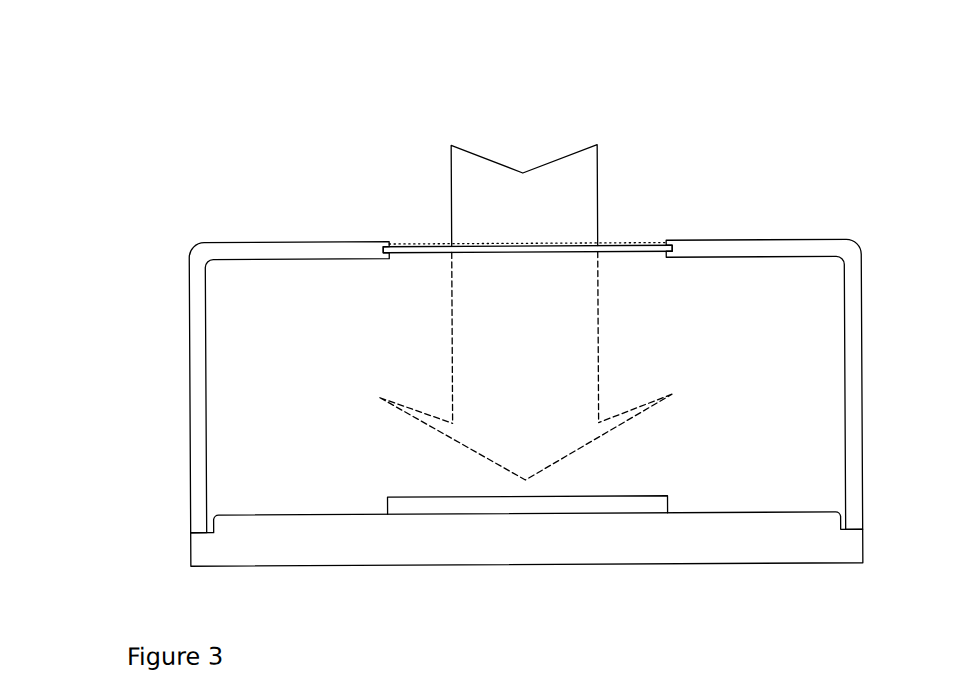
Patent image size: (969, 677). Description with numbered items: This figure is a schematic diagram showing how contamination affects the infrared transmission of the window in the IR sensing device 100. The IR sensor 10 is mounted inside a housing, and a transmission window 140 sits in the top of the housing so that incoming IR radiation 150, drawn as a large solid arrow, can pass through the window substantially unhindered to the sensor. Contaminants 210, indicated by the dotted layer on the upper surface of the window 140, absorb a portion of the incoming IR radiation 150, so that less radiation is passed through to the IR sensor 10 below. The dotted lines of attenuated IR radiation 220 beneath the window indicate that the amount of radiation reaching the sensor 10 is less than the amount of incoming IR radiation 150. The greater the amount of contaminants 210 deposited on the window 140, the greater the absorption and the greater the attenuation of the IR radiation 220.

The IR sensing device 100 is at (190, 204).
The IR sensor 10 is at (498, 509).
The transmission window 140 is at (419, 243).
The incoming IR radiation 150 is at (524, 173).
The contaminants 210 is at (626, 242).
The attenuated IR radiation 220 is at (525, 425).